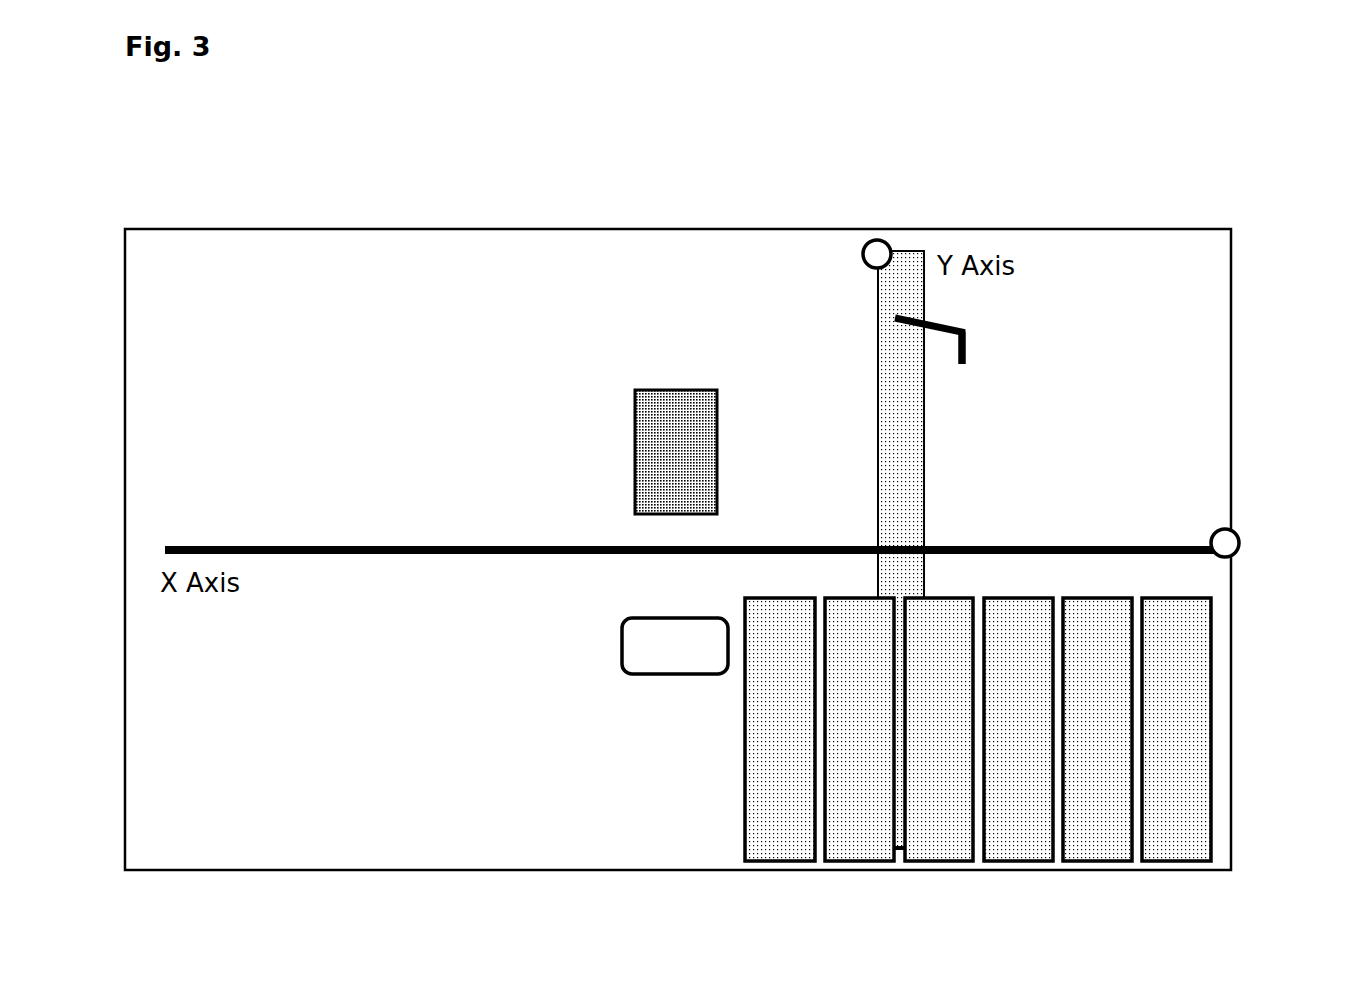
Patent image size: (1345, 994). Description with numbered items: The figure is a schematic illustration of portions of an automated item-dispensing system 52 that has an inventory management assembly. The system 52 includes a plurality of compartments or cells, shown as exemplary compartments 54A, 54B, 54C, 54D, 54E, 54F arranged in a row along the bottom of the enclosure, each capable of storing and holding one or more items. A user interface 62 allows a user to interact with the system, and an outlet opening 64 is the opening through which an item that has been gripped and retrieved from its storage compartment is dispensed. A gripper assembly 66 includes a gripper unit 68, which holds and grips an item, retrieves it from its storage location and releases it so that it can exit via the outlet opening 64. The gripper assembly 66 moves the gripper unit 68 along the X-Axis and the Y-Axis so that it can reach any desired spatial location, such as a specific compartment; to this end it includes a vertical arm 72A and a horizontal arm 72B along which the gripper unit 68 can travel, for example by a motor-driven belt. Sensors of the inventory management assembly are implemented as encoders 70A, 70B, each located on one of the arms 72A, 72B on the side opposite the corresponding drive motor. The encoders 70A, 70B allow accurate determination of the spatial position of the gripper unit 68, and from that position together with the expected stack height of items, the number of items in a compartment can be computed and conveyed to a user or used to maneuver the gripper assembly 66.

The system 52 is at (660, 150).
The compartment 54A is at (1180, 862).
The compartment 54B is at (1100, 862).
The compartment 54C is at (1018, 862).
The compartment 54D is at (940, 861).
The compartment 54E is at (848, 861).
The compartment 54F is at (775, 861).
The user interface 62 is at (662, 372).
The outlet opening 64 is at (672, 698).
The gripper assembly 66 is at (1025, 303).
The gripper unit 68 is at (978, 350).
The encoder 70A is at (865, 240).
The encoder 70B is at (1240, 525).
The vertical arm 72A is at (876, 424).
The horizontal arm 72B is at (1113, 545).